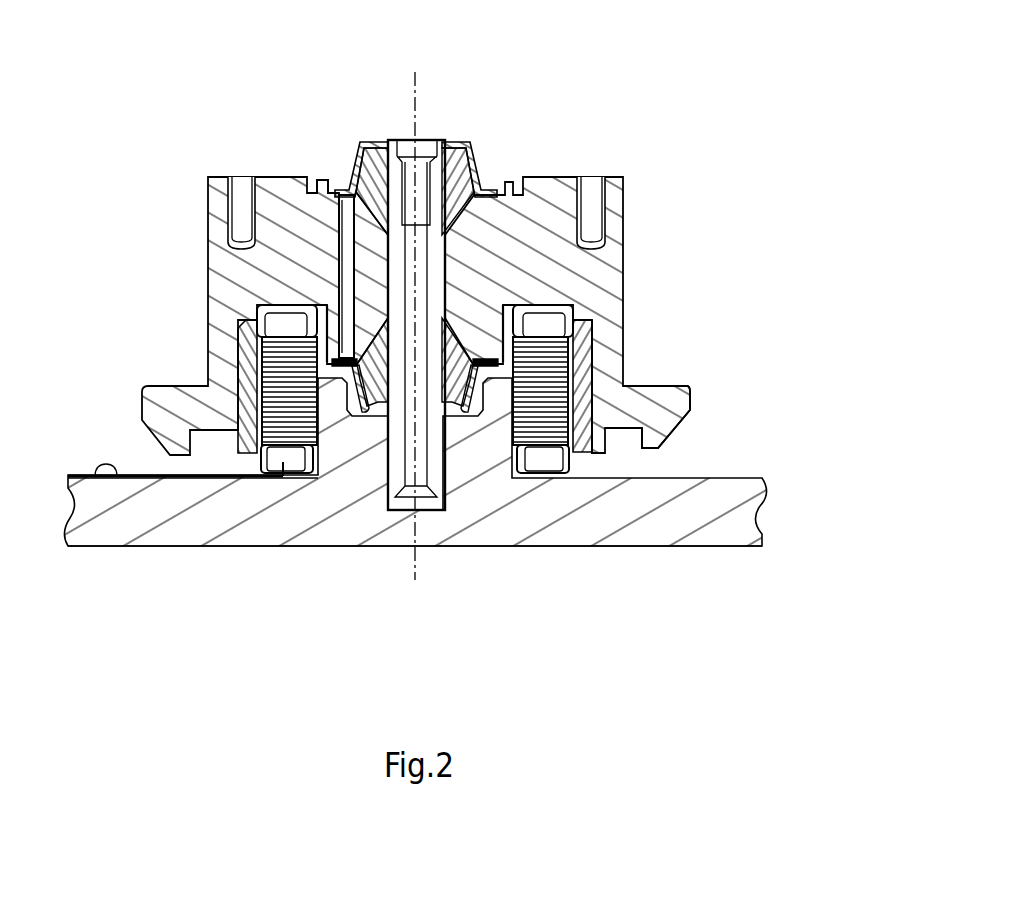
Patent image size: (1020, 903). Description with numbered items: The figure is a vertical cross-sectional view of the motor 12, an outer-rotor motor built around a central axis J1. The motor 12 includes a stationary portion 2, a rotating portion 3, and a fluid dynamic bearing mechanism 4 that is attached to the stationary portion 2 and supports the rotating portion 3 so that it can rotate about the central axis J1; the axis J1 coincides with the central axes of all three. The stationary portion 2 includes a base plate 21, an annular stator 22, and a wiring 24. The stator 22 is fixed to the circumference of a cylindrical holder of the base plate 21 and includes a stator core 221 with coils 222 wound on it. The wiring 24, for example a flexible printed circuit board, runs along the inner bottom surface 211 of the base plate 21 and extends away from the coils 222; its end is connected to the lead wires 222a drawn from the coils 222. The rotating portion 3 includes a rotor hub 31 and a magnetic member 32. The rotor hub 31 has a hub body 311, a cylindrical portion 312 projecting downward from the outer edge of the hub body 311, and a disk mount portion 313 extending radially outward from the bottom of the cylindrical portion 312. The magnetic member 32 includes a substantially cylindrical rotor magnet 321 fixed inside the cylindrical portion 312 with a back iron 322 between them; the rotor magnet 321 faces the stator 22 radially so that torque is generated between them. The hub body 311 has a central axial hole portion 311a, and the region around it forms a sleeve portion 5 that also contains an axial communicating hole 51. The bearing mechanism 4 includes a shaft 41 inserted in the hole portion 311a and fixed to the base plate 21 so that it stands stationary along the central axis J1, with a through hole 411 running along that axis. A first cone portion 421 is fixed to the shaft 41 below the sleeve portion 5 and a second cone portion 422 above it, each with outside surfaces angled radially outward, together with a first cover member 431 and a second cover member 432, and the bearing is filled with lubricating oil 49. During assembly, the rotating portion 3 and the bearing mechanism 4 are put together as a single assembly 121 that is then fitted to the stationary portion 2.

The stationary portion 2 is at (411, 525).
The base plate 21 is at (152, 528).
The inner bottom surface 211 is at (93, 478).
The wiring 24 is at (190, 478).
The stator 22 is at (346, 494).
The stator core 221 is at (302, 423).
The coils 222 is at (287, 462).
The lead wires 222a is at (258, 466).
The motor 12 is at (434, 232).
The assembly 121 is at (626, 65).
The rotating portion 3 is at (581, 269).
The rotor hub 31 is at (556, 269).
The hub body 311 is at (548, 278).
The hole portion 311a is at (354, 190).
The cylindrical portion 312 is at (623, 375).
The disk mount portion 313 is at (678, 408).
The magnetic member 32 is at (649, 342).
The rotor magnet 321 is at (585, 338).
The back iron 322 is at (618, 372).
The sleeve portion 5 is at (297, 210).
The communicating hole 51 is at (339, 245).
The fluid dynamic bearing mechanism 4 is at (451, 338).
The central axis J1 is at (410, 76).
The shaft 41 is at (410, 379).
The through hole 411 is at (408, 466).
The second cone portion 422 is at (473, 145).
The second cover member 432 is at (480, 172).
The first cone portion 421 is at (458, 382).
The first cover member 431 is at (470, 406).
The lubricating oil 49 is at (366, 411).